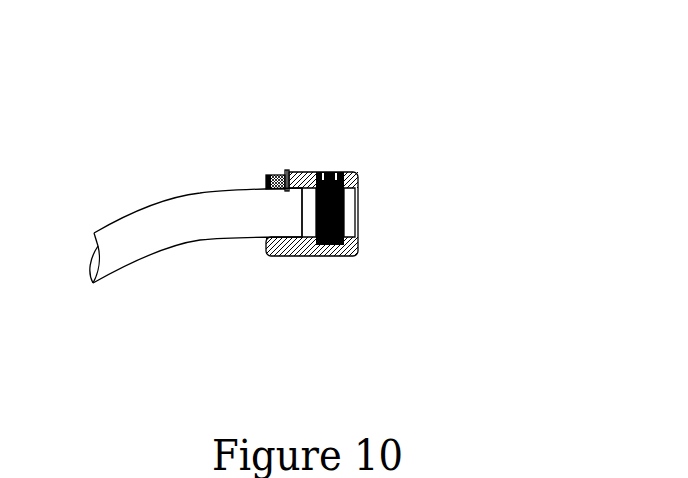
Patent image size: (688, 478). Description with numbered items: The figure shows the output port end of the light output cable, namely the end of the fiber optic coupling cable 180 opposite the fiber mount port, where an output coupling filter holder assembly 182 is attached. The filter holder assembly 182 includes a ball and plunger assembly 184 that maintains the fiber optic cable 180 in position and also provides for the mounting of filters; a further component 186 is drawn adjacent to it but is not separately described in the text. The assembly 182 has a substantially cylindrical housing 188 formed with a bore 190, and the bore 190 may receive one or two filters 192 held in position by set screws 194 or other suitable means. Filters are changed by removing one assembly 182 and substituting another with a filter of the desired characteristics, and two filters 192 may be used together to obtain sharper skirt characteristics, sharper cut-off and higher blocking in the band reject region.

The fiber optic coupling cable 180 is at (168, 248).
The output coupling filter holder assembly 182 is at (258, 74).
The ball and plunger assembly 184 is at (290, 172).
The nut 186 is at (265, 185).
The cylindrical housing 188 is at (352, 256).
The bore 190 is at (357, 228).
The filter 192 is at (358, 195).
The set screw 194 is at (325, 173).